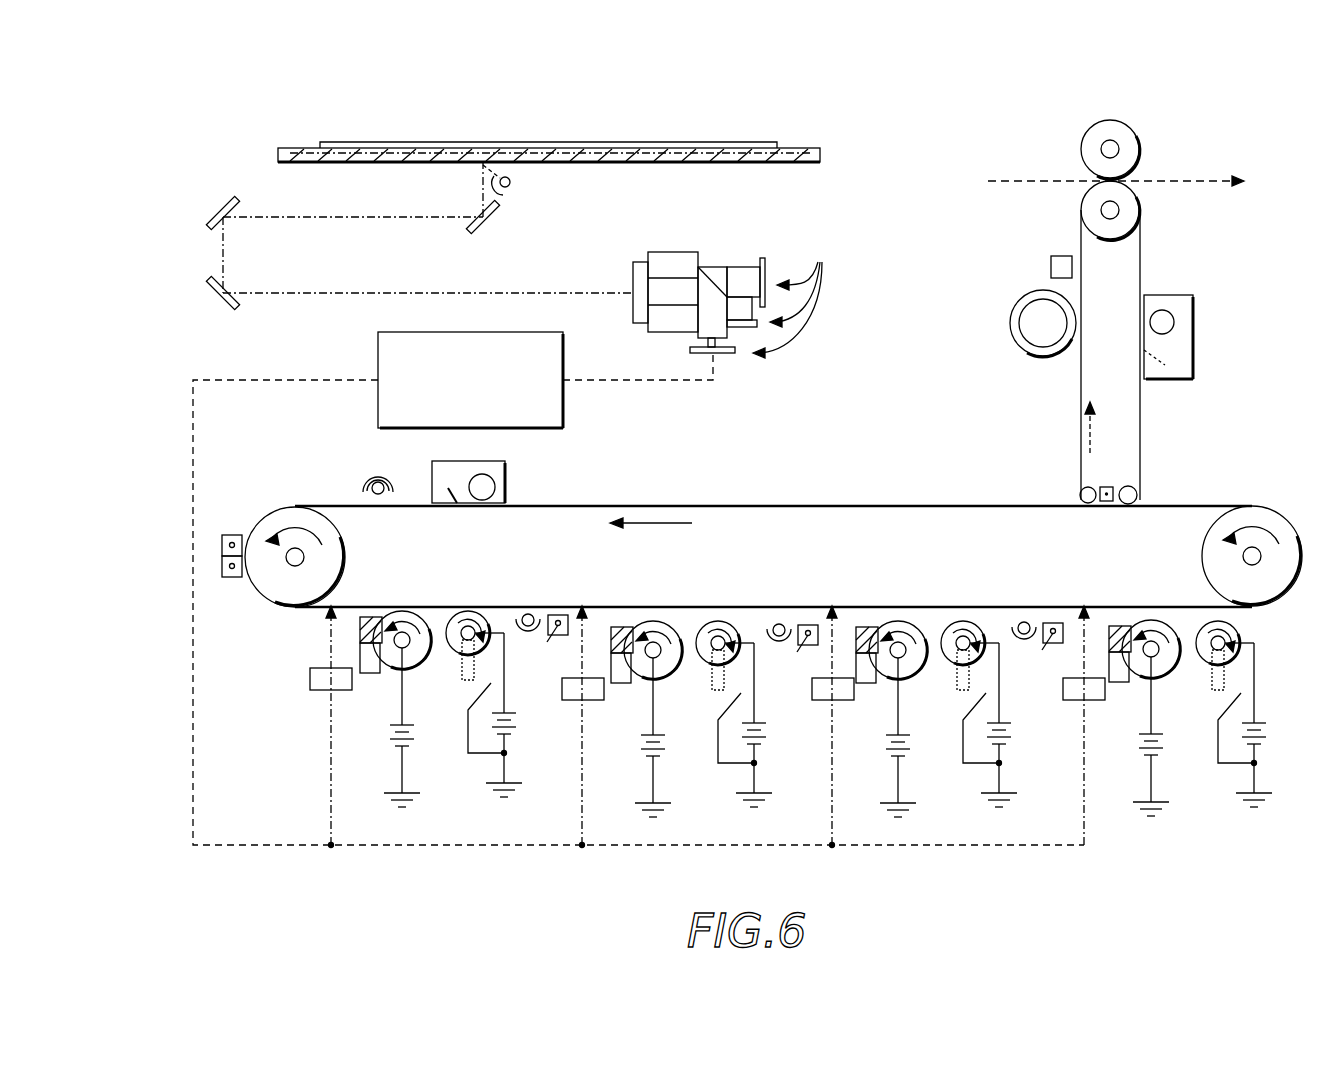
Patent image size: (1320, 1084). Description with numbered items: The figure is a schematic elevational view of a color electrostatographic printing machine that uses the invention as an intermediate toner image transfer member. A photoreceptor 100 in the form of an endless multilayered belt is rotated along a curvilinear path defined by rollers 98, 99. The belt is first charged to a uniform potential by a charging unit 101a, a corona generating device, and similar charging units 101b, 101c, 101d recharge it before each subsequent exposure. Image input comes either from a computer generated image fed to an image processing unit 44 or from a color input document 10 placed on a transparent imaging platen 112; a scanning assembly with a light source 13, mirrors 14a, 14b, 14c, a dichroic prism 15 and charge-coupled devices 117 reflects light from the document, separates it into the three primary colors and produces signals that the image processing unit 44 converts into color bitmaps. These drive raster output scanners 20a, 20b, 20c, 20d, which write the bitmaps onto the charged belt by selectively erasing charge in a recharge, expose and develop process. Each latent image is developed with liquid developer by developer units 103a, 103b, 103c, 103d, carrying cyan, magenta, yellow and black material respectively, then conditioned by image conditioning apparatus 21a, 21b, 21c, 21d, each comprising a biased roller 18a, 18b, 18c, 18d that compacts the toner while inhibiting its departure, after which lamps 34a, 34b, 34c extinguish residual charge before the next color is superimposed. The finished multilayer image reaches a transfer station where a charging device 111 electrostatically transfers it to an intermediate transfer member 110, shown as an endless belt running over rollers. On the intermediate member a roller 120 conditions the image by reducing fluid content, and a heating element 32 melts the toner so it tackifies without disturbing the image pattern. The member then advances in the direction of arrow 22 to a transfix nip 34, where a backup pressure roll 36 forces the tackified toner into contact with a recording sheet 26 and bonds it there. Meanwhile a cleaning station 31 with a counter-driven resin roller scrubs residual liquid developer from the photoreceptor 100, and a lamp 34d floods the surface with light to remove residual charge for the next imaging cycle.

The color input document 10 is at (346, 142).
The transparent imaging platen 112 is at (383, 161).
The light source 13 is at (511, 187).
The mirror 14a is at (490, 228).
The mirror 14b is at (218, 205).
The mirror 14c is at (218, 300).
The dichroic prism 15 is at (672, 252).
The charge-coupled devices 117 is at (845, 259).
The image processing unit 44 is at (563, 352).
The backup pressure roll 36 is at (1083, 146).
The transfix nip 34 is at (1070, 178).
The recording sheet 26 is at (1180, 176).
The intermediate transfer member 110 is at (1141, 282).
The heating element 32 is at (1058, 263).
The roller 120 is at (985, 323).
The arrow 22 is at (1087, 437).
The charging device 111 is at (1100, 520).
The photoreceptor 100 is at (572, 506).
The roller 98 is at (275, 600).
The roller 99 is at (1250, 505).
The cleaning station 31 is at (503, 492).
The lamp 34d is at (372, 477).
The charging unit 101a is at (215, 540).
The image conditioning apparatus 21a is at (450, 597).
The liquid developer unit 103a is at (422, 692).
The roller 18a is at (468, 626).
The lamp 34a is at (528, 613).
The charging unit 101b is at (551, 646).
The raster output scanner 20a is at (310, 703).
The image conditioning apparatus 21b is at (705, 597).
The liquid developer unit 103b is at (673, 700).
The roller 18b is at (718, 636).
The lamp 34b is at (779, 623).
The charging unit 101c is at (790, 651).
The raster output scanner 20b is at (592, 722).
The image conditioning apparatus 21c is at (950, 597).
The liquid developer unit 103c is at (918, 700).
The roller 18c is at (963, 636).
The lamp 34c is at (1024, 621).
The charging unit 101d is at (1040, 650).
The raster output scanner 20c is at (842, 720).
The image conditioning apparatus 21d is at (1180, 583).
The liquid developer unit 103d is at (1171, 700).
The roller 18d is at (1228, 640).
The raster output scanner 20d is at (1092, 712).